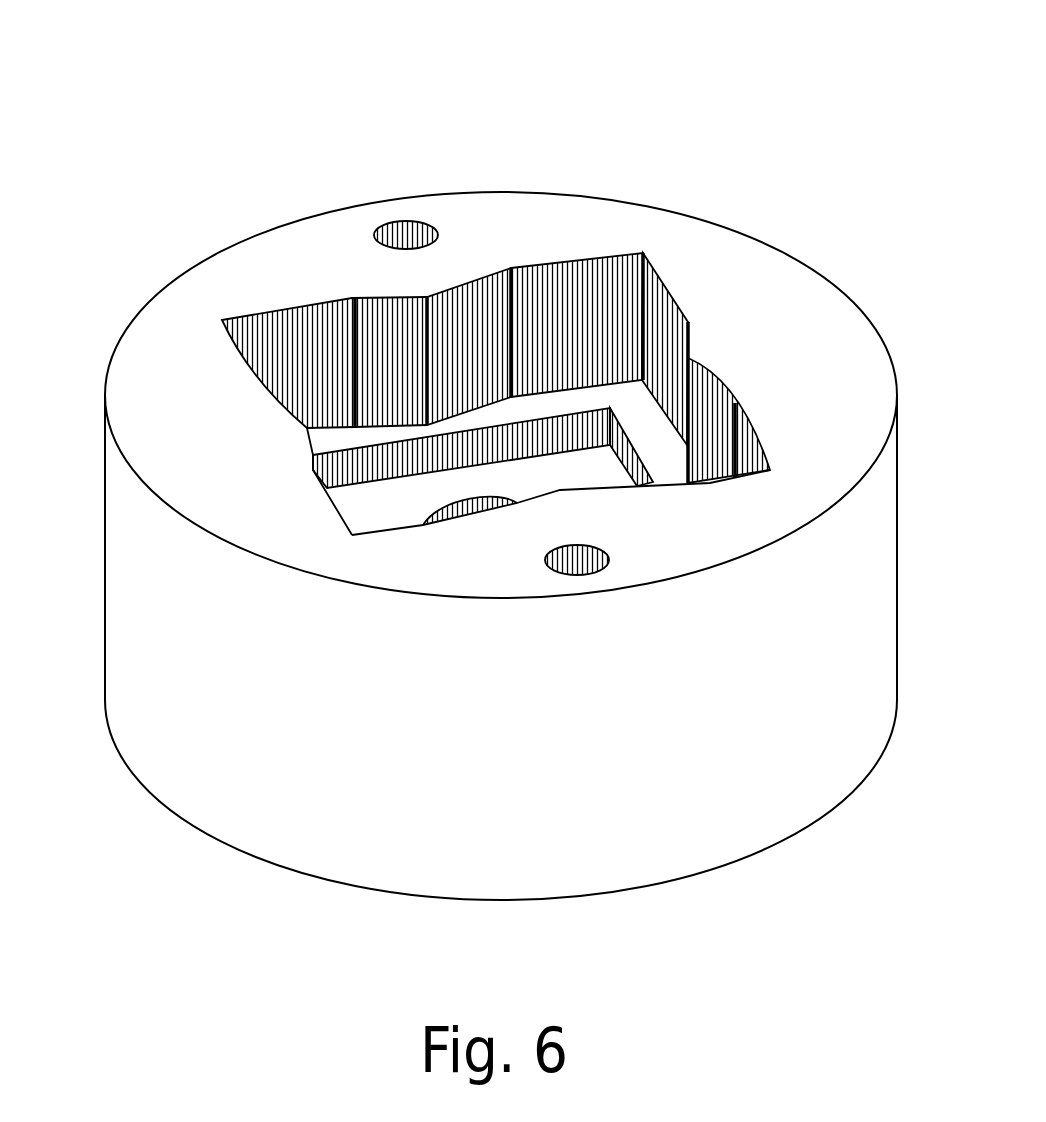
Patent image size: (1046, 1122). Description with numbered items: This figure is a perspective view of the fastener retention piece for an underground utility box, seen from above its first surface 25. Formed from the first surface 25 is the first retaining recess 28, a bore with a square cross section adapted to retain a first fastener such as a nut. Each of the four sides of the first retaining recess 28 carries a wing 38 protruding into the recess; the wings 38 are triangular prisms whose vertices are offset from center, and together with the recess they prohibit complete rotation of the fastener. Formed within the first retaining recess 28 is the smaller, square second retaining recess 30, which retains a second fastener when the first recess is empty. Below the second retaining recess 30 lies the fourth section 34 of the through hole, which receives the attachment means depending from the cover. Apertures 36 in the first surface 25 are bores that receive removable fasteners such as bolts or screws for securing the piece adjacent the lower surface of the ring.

The first surface 25 is at (753, 320).
The first retaining recess 28 is at (575, 330).
The second retaining recess 30 is at (482, 450).
The fourth section 34 is at (467, 510).
The apertures 36 is at (408, 233).
The wing 38 is at (395, 360).